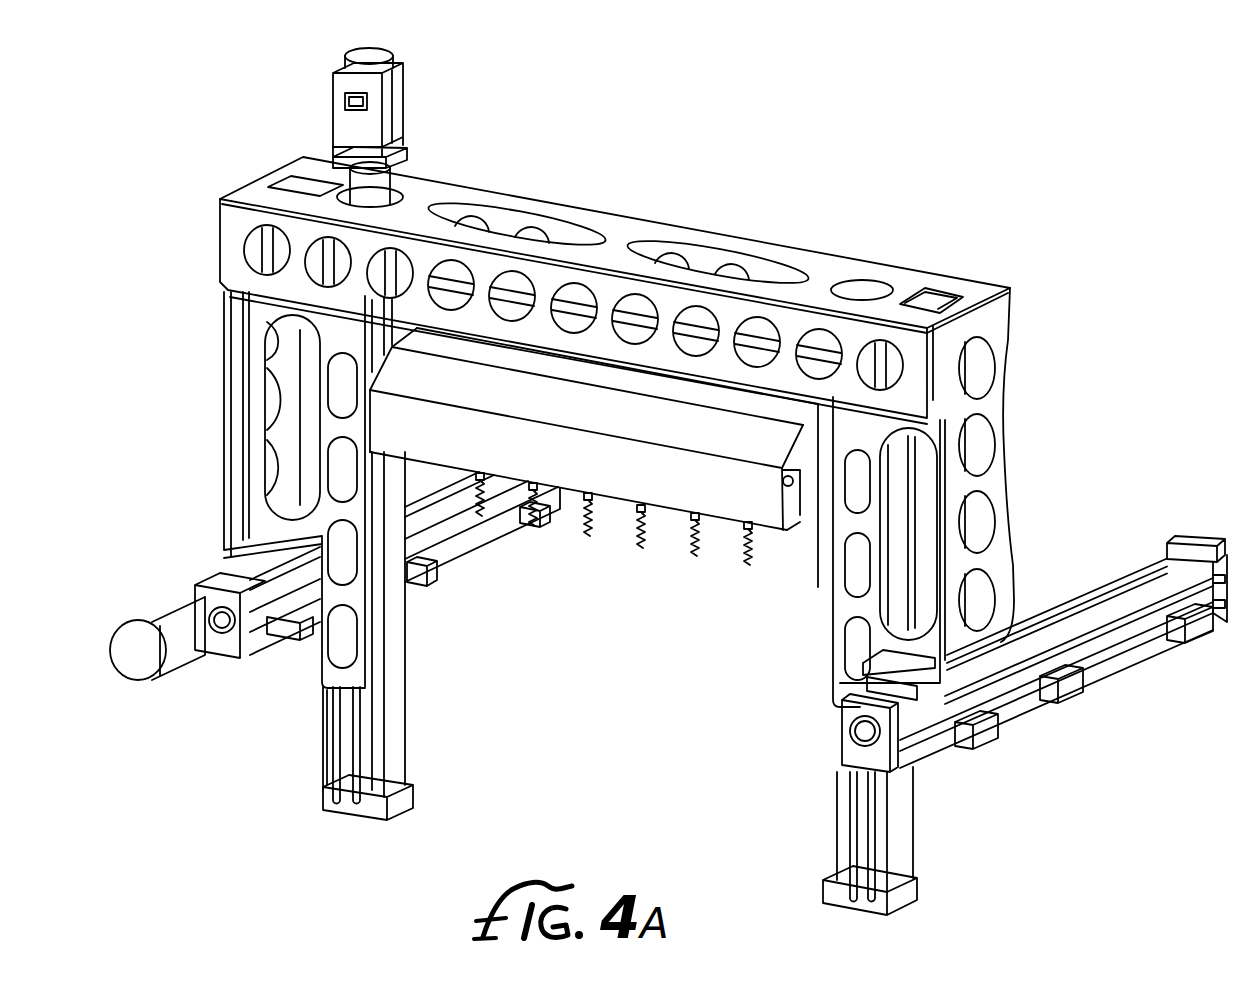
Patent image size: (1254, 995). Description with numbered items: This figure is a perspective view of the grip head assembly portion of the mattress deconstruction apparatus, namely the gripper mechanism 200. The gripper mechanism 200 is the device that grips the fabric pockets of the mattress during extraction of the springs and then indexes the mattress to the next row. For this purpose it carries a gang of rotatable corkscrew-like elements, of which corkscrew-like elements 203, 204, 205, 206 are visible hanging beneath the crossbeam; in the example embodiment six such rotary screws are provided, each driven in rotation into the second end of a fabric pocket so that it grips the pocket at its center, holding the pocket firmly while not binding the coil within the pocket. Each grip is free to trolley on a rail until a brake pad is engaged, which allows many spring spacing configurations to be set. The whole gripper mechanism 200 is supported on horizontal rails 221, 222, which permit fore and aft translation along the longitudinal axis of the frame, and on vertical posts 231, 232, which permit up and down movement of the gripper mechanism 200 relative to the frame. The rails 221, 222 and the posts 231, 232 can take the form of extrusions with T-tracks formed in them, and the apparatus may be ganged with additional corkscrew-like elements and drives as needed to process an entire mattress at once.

The gripper mechanism 200 is at (1104, 294).
The rotatable corkscrew-like element 203 is at (593, 540).
The rotatable corkscrew-like element 204 is at (648, 550).
The rotatable corkscrew-like element 205 is at (700, 558).
The rotatable corkscrew-like element 206 is at (753, 567).
The horizontal rail 221 is at (442, 512).
The horizontal rail 222 is at (1100, 600).
The vertical post 231 is at (387, 708).
The vertical post 232 is at (862, 808).